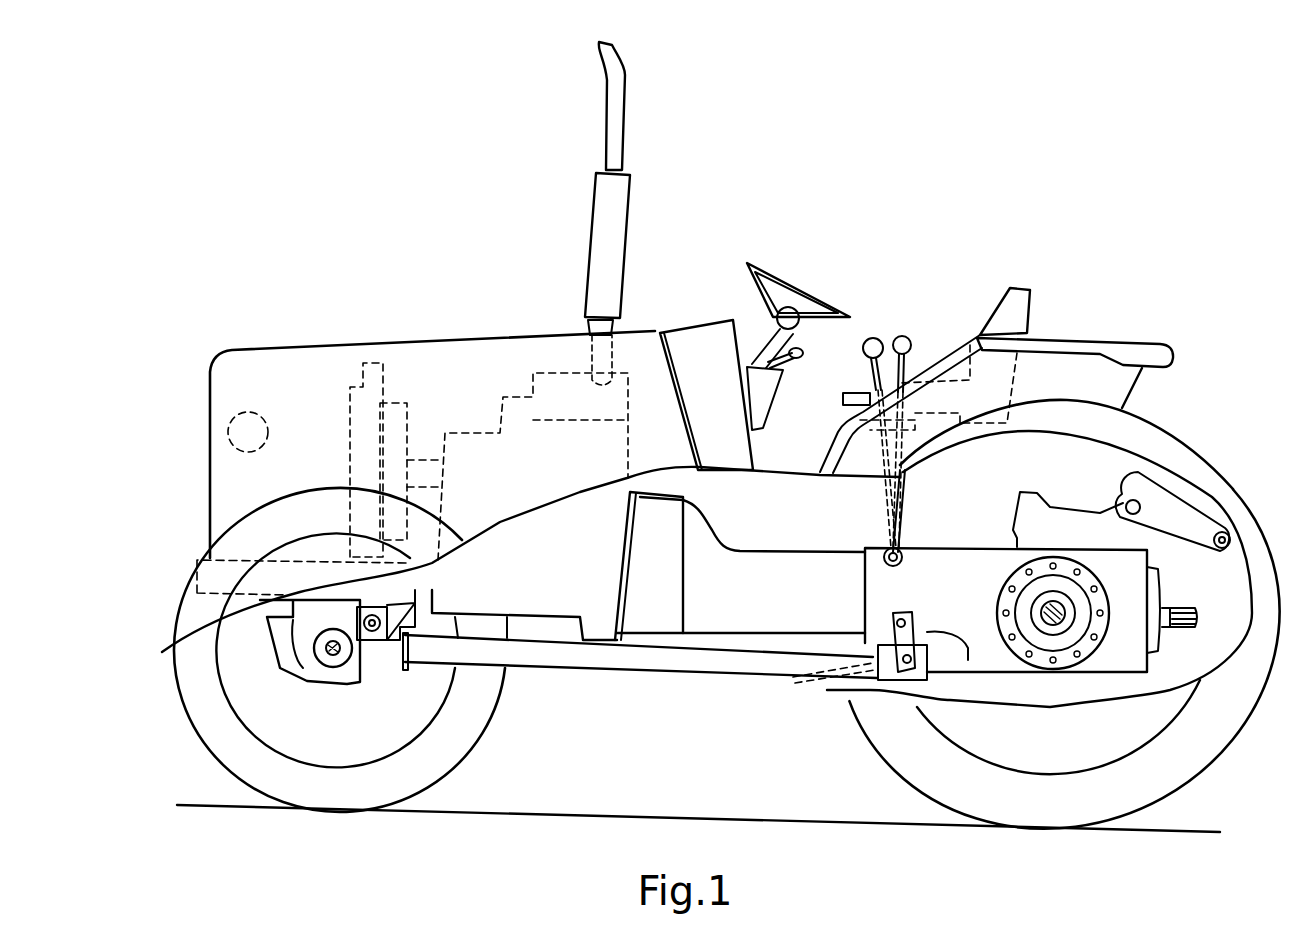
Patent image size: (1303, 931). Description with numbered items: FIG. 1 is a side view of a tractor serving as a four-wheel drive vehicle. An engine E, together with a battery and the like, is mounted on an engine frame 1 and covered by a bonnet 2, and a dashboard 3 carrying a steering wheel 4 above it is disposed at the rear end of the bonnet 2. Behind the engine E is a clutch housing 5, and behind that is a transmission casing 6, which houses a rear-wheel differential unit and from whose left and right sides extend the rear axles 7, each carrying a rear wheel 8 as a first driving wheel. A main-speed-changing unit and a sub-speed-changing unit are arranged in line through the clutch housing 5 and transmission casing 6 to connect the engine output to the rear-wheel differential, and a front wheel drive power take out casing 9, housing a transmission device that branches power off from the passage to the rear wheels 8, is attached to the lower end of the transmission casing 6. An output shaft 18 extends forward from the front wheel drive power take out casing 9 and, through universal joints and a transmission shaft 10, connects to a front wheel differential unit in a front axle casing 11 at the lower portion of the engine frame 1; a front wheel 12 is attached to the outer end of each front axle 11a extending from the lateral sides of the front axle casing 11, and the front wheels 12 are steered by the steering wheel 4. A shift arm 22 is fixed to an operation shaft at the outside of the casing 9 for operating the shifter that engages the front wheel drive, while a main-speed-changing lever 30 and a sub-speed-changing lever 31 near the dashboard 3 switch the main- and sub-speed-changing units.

The engine frame 1 is at (231, 618).
The bonnet 2 is at (294, 347).
The dashboard 3 is at (698, 415).
The steering wheel 4 is at (773, 272).
The clutch housing 5 is at (738, 618).
The transmission casing 6 is at (940, 621).
The rear axle 7 is at (1050, 625).
The rear wheel 8 is at (891, 765).
The front wheel drive power take out casing 9 is at (830, 687).
The transmission shaft 10 is at (605, 663).
The front axle casing 11 is at (315, 683).
The front axle 11a is at (335, 660).
The front wheel 12 is at (463, 757).
The output shaft 18 is at (793, 677).
The shift arm 22 is at (968, 655).
The main-speed-changing lever 30 is at (875, 336).
The sub-speed-changing lever 31 is at (907, 336).
The engine E is at (528, 577).